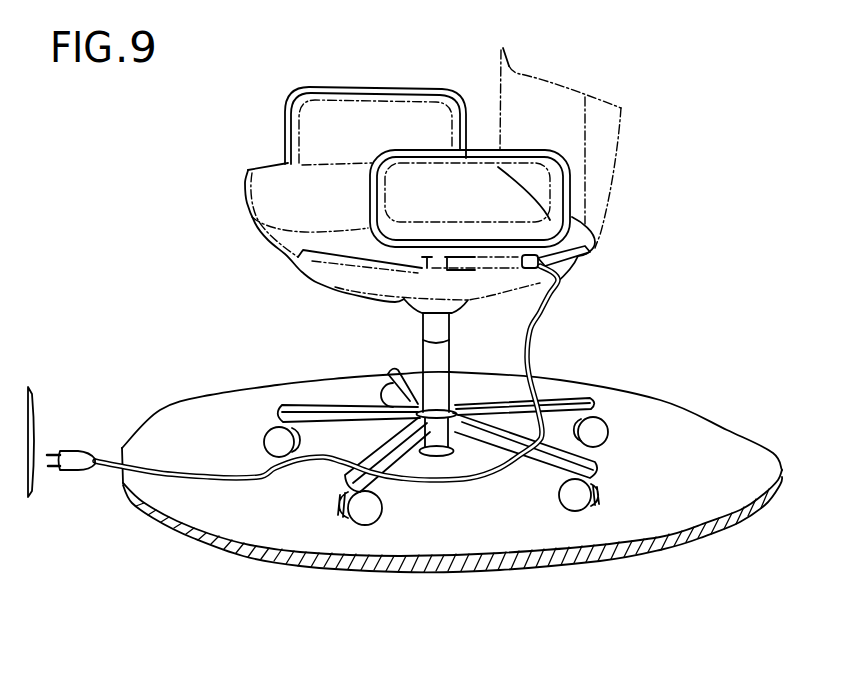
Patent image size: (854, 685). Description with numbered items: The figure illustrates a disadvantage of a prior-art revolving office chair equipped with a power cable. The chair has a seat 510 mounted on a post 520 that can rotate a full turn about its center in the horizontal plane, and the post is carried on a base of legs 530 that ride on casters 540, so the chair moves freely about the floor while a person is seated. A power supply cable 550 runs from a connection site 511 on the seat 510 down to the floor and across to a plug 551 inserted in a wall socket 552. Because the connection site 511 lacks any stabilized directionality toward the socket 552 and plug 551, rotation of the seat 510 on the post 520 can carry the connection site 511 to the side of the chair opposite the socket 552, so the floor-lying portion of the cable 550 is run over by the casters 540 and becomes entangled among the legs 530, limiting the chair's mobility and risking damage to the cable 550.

The seat 510 is at (297, 194).
The connection site 511 is at (588, 257).
The post 520 is at (422, 313).
The legs 530 is at (300, 413).
The casters 540 is at (572, 505).
The power supply cable 550 is at (547, 317).
The plug 551 is at (70, 452).
The socket 552 is at (36, 403).